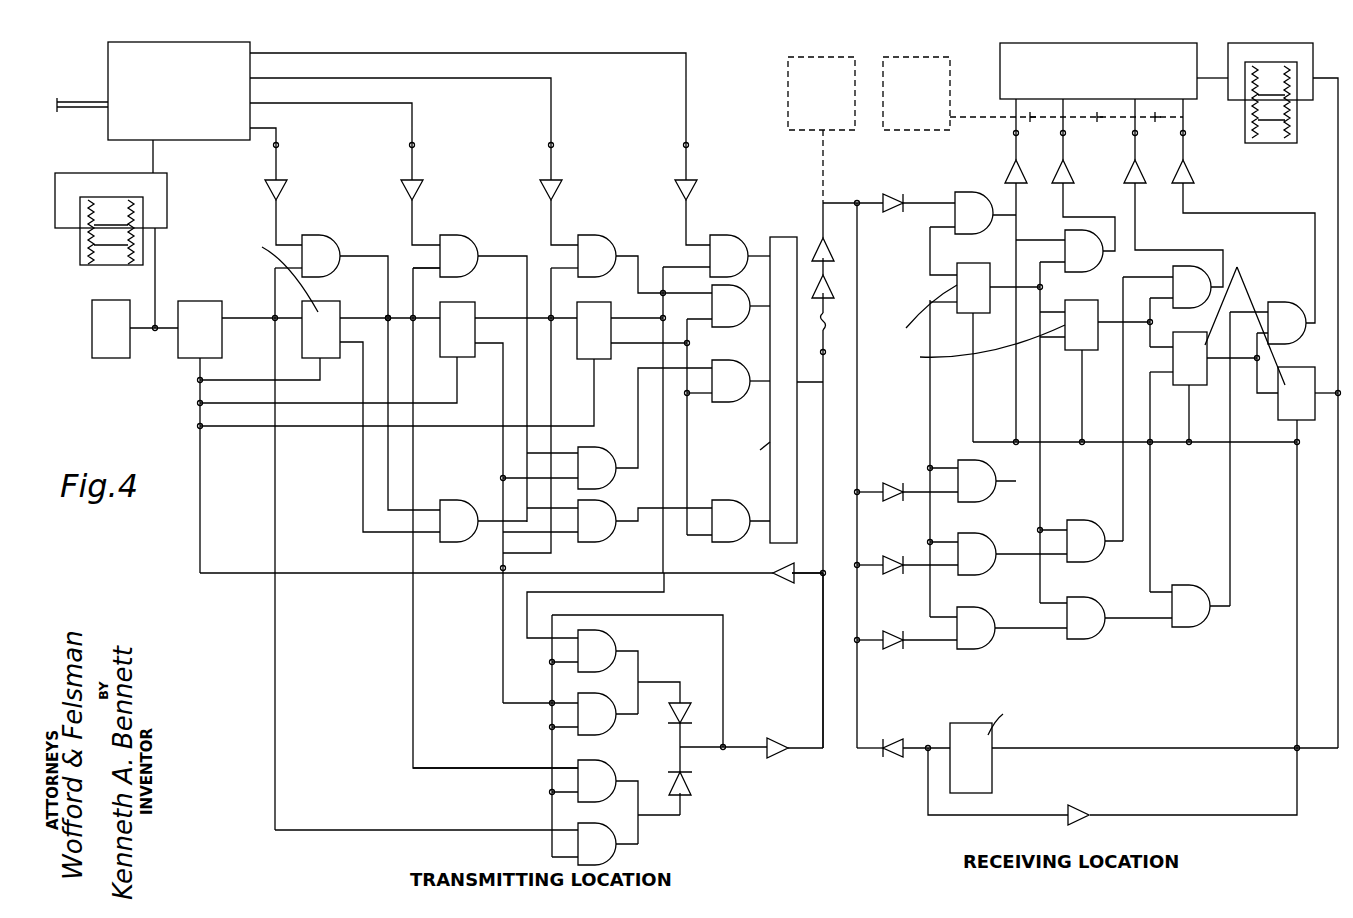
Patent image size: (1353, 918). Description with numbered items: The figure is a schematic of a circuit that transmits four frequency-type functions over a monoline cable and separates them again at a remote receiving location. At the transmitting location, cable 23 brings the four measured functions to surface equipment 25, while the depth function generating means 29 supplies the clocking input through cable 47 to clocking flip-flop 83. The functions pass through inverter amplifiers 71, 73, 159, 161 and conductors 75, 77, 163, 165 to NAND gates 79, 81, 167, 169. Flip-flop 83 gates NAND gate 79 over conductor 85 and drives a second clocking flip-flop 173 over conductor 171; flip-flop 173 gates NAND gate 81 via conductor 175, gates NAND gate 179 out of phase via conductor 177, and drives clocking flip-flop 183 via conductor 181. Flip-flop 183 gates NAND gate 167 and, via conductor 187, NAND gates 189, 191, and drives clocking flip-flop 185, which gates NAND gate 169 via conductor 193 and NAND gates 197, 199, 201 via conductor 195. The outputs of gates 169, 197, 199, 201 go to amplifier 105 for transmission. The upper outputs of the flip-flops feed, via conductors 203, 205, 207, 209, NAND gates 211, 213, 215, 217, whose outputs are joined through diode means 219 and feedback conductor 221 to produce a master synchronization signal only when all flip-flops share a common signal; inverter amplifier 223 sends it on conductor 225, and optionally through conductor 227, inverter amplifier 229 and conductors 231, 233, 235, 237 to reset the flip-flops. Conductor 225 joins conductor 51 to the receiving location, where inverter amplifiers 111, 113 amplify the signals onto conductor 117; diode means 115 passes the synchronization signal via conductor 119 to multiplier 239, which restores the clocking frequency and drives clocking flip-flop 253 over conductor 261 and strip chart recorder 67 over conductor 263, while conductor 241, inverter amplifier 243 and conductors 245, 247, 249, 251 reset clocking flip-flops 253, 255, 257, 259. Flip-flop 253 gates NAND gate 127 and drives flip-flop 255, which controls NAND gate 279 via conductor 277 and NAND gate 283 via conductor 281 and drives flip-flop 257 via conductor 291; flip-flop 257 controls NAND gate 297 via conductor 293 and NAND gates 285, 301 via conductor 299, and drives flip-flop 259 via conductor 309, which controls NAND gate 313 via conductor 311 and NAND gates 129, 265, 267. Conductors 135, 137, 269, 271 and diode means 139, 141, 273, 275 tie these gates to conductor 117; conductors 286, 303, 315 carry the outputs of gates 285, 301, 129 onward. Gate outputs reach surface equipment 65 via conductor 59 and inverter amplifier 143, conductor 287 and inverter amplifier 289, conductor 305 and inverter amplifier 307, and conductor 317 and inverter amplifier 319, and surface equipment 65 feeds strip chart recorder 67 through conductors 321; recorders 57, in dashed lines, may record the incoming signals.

The cable 23 is at (74, 102).
The surface equipment 25 is at (108, 54).
The depth function generating means 29 is at (92, 331).
The cable 47 is at (158, 318).
The conductor 51 is at (830, 320).
The recorders 57 is at (830, 46).
The conductor 59 is at (1258, 210).
The surface equipment 65 is at (1000, 60).
The strip chart recorder 67 is at (1272, 34).
The inverter amplifier 71 is at (265, 190).
The inverter amplifier 73 is at (400, 190).
The conductor 75 is at (286, 246).
The conductor 77 is at (425, 246).
The NAND gate 79 is at (326, 236).
The NAND gate 81 is at (464, 236).
The clocking flip-flop 83 is at (205, 301).
The conductor 85 is at (238, 318).
The amplifier 105 is at (784, 237).
The inverter amplifier 111 is at (833, 285).
The inverter amplifier 113 is at (833, 248).
The diode means 115 is at (882, 754).
The conductor 117 is at (858, 418).
The conductor 119 is at (914, 746).
The NAND gate 127 is at (1290, 291).
The NAND gate 129 is at (984, 499).
The conductor 135 is at (868, 185).
The conductor 137 is at (873, 488).
The diode means 139 is at (893, 198).
The diode means 141 is at (884, 508).
The inverter amplifier 143 is at (1190, 182).
The inverter amplifier 159 is at (540, 190).
The inverter amplifier 161 is at (675, 190).
The conductor 163 is at (556, 246).
The conductor 165 is at (690, 246).
The NAND gate 167 is at (602, 236).
The NAND gate 169 is at (735, 236).
The conductor 171 is at (278, 321).
The clocking flip-flop 173 is at (318, 301).
The conductor 175 is at (360, 318).
The conductor 177 is at (362, 532).
The NAND gate 179 is at (462, 500).
The conductor 181 is at (430, 340).
The clocking flip-flop 183 is at (455, 302).
The clocking flip-flop 185 is at (587, 302).
The conductor 187 is at (505, 472).
The NAND gate 189 is at (586, 450).
The NAND gate 191 is at (600, 510).
The conductor 193 is at (665, 267).
The conductor 195 is at (688, 345).
The NAND gate 197 is at (740, 327).
The NAND gate 199 is at (736, 402).
The NAND gate 201 is at (740, 500).
The conductor 203 is at (277, 690).
The conductor 205 is at (412, 718).
The conductor 207 is at (502, 682).
The conductor 209 is at (527, 610).
The NAND gate 211 is at (618, 640).
The NAND gate 213 is at (610, 732).
The NAND gate 215 is at (608, 764).
The NAND gate 217 is at (618, 856).
The diode means 219 is at (690, 795).
The feedback conductor 221 is at (724, 665).
The inverter amplifier 223 is at (785, 740).
The conductor 225 is at (822, 660).
The conductor 227 is at (808, 583).
The inverter amplifier 229 is at (772, 576).
The conductor 231 is at (199, 372).
The conductor 233 is at (219, 380).
The conductor 235 is at (456, 403).
The conductor 237 is at (242, 430).
The multiplier 239 is at (993, 774).
The conductor 241 is at (926, 810).
The inverter amplifier 243 is at (1078, 806).
The conductor 245 is at (1296, 447).
The conductor 247 is at (1193, 448).
The conductor 249 is at (1083, 448).
The conductor 251 is at (968, 314).
The clocking flip-flop 253 is at (1298, 367).
The clocking flip-flop 255 is at (1200, 332).
The clocking flip-flop 257 is at (1078, 300).
The clocking flip-flop 259 is at (965, 263).
The conductor 261 is at (1238, 748).
The conductor 263 is at (1338, 205).
The NAND gate 265 is at (980, 575).
The NAND gate 267 is at (985, 650).
The conductor 269 is at (875, 562).
The conductor 271 is at (877, 637).
The diode means 273 is at (894, 594).
The diode means 275 is at (900, 650).
The conductor 277 is at (1150, 306).
The NAND gate 279 is at (1188, 266).
The conductor 281 is at (1151, 498).
The NAND gate 283 is at (1195, 628).
The NAND gate 285 is at (1092, 598).
The conductor 286 is at (1137, 620).
The conductor 287 is at (1135, 223).
The inverter amplifier 289 is at (1133, 176).
The conductor 291 is at (1105, 335).
The conductor 293 is at (1048, 243).
The NAND gate 297 is at (1065, 240).
The conductor 299 is at (1042, 489).
The NAND gate 301 is at (1085, 514).
The conductor 303 is at (1105, 550).
The conductor 305 is at (1076, 217).
The inverter amplifier 307 is at (1065, 186).
The conductor 309 is at (1004, 290).
The conductor 311 is at (957, 267).
The NAND gate 313 is at (968, 192).
The conductor 315 is at (1014, 378).
The conductor 317 is at (1016, 214).
The inverter amplifier 319 is at (1006, 180).
The conductors 321 is at (1213, 80).